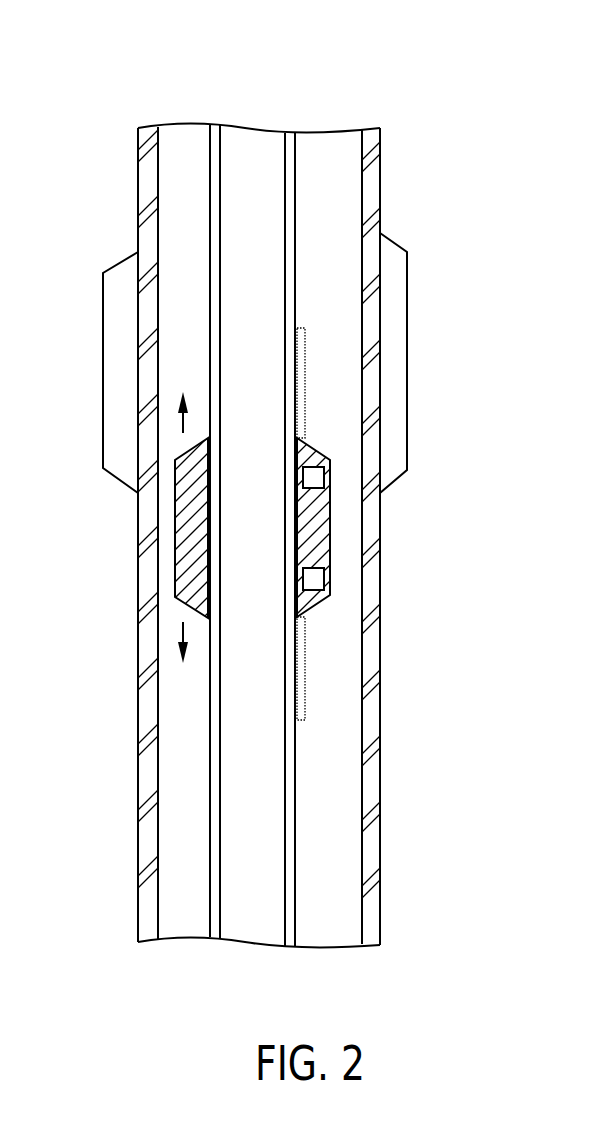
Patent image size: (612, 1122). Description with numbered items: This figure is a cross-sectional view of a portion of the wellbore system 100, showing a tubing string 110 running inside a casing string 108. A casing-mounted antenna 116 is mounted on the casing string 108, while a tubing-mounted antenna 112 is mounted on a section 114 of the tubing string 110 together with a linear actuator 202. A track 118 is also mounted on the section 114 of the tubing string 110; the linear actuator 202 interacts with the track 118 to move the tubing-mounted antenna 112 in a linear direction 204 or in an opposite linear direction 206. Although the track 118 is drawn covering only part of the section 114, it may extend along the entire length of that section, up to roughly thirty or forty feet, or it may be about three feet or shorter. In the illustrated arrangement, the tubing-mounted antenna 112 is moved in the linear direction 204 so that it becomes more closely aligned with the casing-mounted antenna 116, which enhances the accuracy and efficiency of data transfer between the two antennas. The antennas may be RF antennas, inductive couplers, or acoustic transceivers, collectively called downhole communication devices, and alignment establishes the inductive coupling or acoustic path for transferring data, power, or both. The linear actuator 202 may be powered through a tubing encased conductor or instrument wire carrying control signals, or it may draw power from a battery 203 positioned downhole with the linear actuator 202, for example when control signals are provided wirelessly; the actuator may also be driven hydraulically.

The wellbore system 100 is at (508, 120).
The casing string 108 is at (368, 675).
The tubing string 110 is at (290, 140).
The tubing-mounted antenna 112 is at (190, 528).
The section of the tubing string 114 is at (333, 710).
The casing-mounted antenna 116 is at (115, 422).
The track 118 is at (305, 383).
The linear actuator 202 is at (316, 477).
The battery 203 is at (313, 578).
The linear direction 204 is at (182, 425).
The opposite linear direction 206 is at (180, 633).